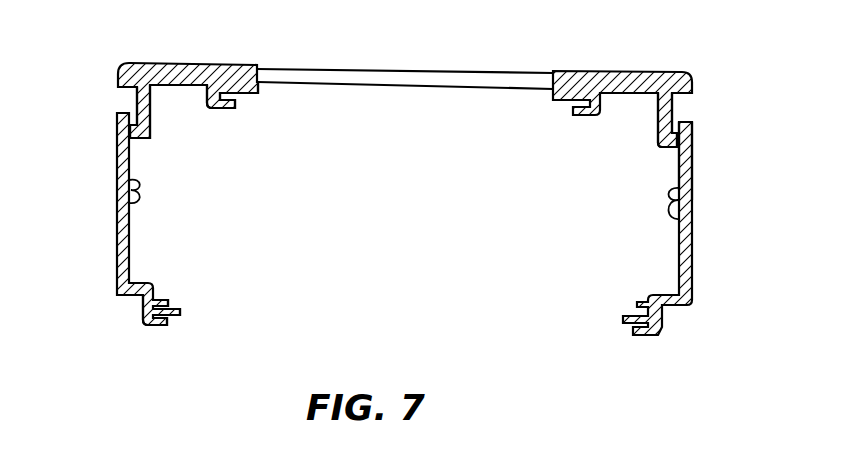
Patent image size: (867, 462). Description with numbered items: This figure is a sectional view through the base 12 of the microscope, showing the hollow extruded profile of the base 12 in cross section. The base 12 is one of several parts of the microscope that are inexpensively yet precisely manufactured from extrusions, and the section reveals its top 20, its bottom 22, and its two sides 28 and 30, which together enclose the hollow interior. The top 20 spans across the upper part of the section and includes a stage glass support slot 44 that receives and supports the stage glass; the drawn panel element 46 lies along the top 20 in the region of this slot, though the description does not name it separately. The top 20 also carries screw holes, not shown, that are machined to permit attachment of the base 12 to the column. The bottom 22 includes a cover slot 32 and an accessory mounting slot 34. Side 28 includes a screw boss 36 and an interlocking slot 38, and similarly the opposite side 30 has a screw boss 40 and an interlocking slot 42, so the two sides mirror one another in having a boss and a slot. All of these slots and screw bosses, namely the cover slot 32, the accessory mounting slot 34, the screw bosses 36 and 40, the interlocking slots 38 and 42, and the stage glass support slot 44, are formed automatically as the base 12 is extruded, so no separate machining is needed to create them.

The base 12 is at (688, 243).
The top 20 is at (197, 63).
The bottom 22 is at (158, 328).
The side 28 is at (113, 273).
The side 30 is at (693, 153).
The cover slot 32 is at (182, 310).
The accessory mounting slot 34 is at (168, 302).
The screw boss 36 is at (138, 200).
The interlocking slot 38 is at (137, 100).
The screw boss 40 is at (667, 218).
The interlocking slot 42 is at (673, 108).
The stage glass support slot 44 is at (240, 101).
The glass panel 46 is at (263, 69).